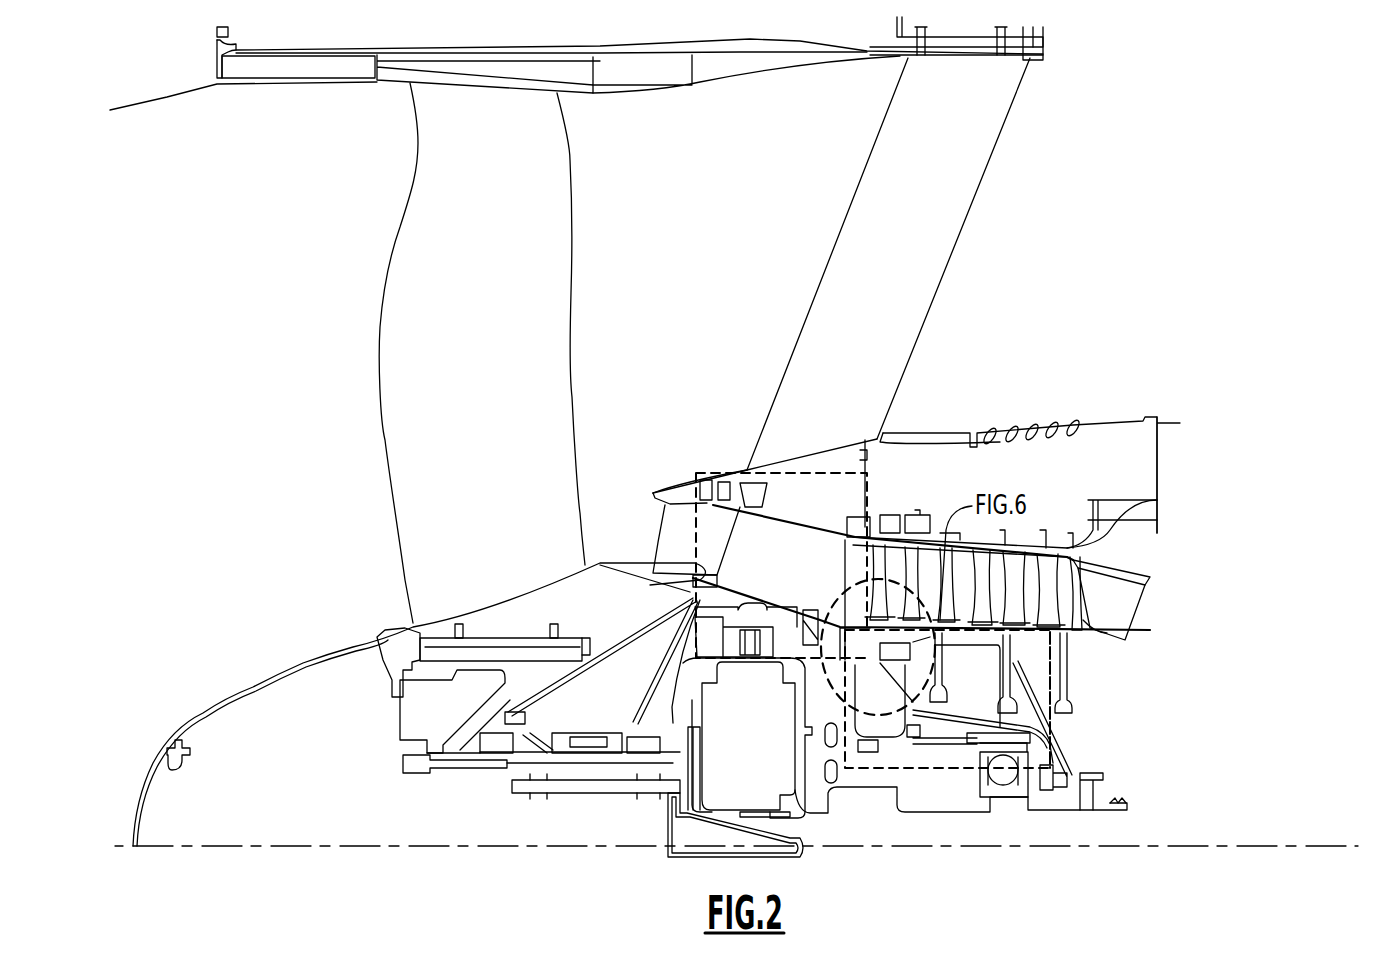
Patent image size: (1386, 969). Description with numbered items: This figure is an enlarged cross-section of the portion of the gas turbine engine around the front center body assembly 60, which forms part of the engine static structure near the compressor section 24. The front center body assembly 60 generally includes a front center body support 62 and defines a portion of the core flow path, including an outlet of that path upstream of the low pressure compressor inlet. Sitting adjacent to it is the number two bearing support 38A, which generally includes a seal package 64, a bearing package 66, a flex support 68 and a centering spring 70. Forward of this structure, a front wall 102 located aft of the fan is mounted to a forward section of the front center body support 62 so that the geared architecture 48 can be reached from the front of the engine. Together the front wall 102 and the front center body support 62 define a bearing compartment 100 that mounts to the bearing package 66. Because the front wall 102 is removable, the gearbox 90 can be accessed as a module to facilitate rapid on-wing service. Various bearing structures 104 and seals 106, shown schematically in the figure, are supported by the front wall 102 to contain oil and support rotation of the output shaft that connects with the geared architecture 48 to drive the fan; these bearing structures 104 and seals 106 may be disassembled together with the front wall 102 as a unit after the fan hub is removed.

The compressor section 24 is at (1195, 607).
The #2 bearing support 38A is at (1052, 682).
The geared architecture 48 is at (808, 815).
The front center body assembly 60 is at (867, 495).
The front center body support 62 is at (815, 574).
The seal package 64 is at (1063, 793).
The bearing package 66 is at (1000, 785).
The flex support 68 is at (880, 735).
The centering spring 70 is at (942, 743).
The gearbox 90 is at (772, 744).
The bearing compartment 100 is at (688, 658).
The front wall 102 is at (607, 652).
The bearing structures 104 is at (535, 745).
The seals 106 is at (497, 747).